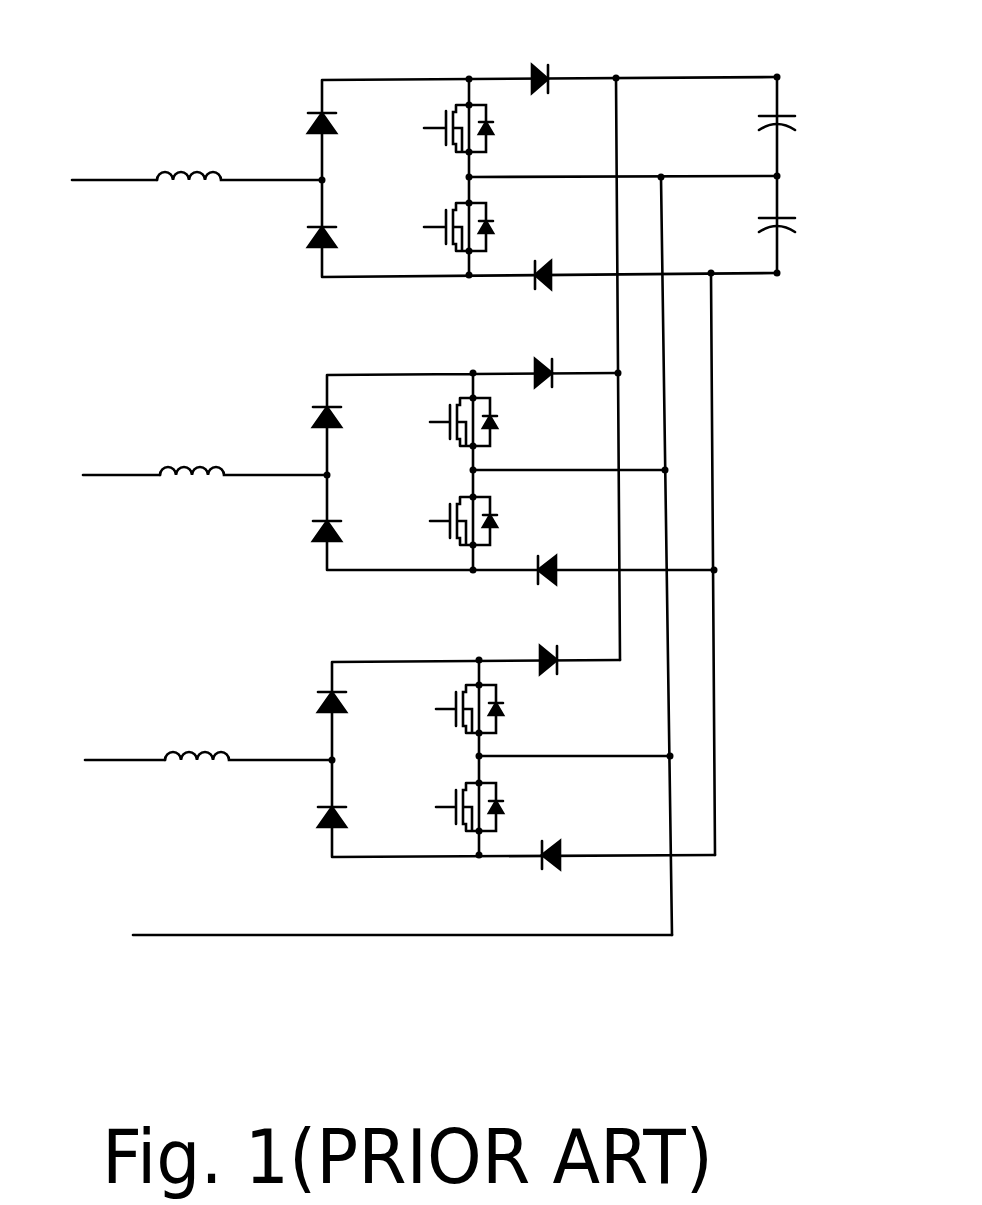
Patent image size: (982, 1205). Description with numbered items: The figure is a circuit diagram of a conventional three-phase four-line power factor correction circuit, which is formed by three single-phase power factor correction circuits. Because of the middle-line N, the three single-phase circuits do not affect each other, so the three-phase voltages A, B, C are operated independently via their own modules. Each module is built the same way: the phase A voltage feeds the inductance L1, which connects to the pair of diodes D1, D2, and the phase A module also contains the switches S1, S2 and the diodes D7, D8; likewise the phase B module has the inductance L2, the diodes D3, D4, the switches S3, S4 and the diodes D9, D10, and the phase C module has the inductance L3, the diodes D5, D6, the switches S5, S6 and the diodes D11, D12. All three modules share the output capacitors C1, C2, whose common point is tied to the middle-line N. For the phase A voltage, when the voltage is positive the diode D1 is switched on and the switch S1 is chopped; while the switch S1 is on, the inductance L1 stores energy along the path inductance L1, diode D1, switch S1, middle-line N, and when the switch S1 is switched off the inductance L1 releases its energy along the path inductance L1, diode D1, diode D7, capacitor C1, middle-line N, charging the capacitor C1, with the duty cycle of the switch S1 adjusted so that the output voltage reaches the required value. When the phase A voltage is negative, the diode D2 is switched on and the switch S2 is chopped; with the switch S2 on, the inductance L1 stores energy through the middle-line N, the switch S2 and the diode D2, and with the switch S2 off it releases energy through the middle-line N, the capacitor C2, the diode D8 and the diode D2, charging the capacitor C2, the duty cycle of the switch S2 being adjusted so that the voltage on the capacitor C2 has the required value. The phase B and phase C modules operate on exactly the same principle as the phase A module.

The phase A voltage A is at (113, 158).
The phase B voltage B is at (121, 452).
The phase C voltage C is at (125, 737).
The middle-line N is at (386, 916).
The inductance L1 is at (239, 155).
The inductance L2 is at (243, 446).
The inductance L3 is at (248, 735).
The diode D1 is at (304, 128).
The diode D2 is at (304, 242).
The diode D3 is at (306, 415).
The diode D4 is at (306, 526).
The diode D5 is at (311, 698).
The diode D6 is at (311, 812).
The diode D7 is at (549, 61).
The diode D8 is at (555, 256).
The diode D9 is at (561, 388).
The diode D10 is at (567, 553).
The diode D11 is at (570, 675).
The diode D12 is at (571, 840).
The switch S1 is at (472, 129).
The switch S2 is at (472, 227).
The switch S3 is at (481, 422).
The switch S4 is at (476, 521).
The switch S5 is at (486, 709).
The switch S6 is at (482, 807).
The capacitor C1 is at (799, 114).
The capacitor C2 is at (799, 237).